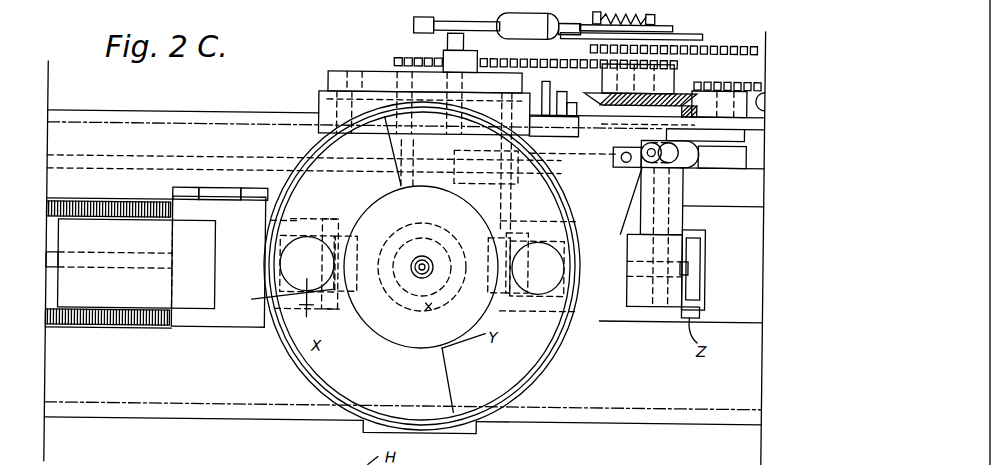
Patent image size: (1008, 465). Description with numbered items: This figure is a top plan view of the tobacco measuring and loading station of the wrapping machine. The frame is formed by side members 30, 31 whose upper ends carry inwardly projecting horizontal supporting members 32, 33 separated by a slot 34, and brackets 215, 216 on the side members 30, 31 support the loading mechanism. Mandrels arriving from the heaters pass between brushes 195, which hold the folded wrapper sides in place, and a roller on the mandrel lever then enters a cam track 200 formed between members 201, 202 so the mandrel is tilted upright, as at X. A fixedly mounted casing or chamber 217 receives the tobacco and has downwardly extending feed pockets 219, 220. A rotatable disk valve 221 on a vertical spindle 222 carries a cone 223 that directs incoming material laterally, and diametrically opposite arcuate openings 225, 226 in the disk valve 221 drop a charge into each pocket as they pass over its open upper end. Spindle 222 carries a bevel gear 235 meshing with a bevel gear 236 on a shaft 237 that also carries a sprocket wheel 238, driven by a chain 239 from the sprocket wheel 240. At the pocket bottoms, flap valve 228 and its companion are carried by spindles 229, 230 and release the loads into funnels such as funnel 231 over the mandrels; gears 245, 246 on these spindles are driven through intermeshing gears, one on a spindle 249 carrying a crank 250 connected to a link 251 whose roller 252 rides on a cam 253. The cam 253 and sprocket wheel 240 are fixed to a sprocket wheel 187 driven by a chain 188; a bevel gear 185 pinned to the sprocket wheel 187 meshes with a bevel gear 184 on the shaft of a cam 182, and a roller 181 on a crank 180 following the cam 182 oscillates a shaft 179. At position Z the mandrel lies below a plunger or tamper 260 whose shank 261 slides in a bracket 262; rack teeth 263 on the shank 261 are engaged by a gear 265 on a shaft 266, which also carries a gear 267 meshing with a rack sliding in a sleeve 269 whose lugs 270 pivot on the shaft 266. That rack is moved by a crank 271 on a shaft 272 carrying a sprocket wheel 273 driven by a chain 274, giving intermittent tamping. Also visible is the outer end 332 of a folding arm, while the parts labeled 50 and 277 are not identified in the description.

The side member 30 is at (137, 121).
The side member 31 is at (117, 423).
The horizontal supporting member 32 is at (60, 189).
The horizontal supporting member 33 is at (58, 362).
The slot 34 is at (46, 261).
The slide block 50 is at (68, 288).
The shaft 179 is at (98, 168).
The crank 180 is at (425, 82).
The roller 181 is at (543, 80).
The cam 182 is at (552, 93).
The bevel gear 184 is at (711, 72).
The bevel gear 185 is at (606, 89).
The sprocket wheel 187 is at (688, 50).
The chain 188 is at (763, 30).
The brushes 195 is at (120, 199).
The cam track 200 is at (215, 199).
The member 201 is at (188, 199).
The member 202 is at (255, 199).
The bracket 215 is at (385, 150).
The bracket 216 is at (368, 429).
The casing or chamber 217 is at (275, 331).
The feed pocket 219 is at (282, 262).
The feed pocket 220 is at (560, 264).
The rotatable disk valve 221 is at (305, 336).
The vertical spindle 222 is at (418, 279).
The cone 223 is at (373, 312).
The arcuate opening 225 is at (278, 298).
The arcuate opening 226 is at (563, 236).
The flap valve 228 is at (537, 294).
The spindle 229 is at (338, 207).
The spindle 230 is at (518, 246).
The funnel 231 is at (283, 221).
The bevel gear 235 is at (433, 309).
The bevel gear 236 is at (447, 228).
The shaft 237 is at (402, 200).
The sprocket wheel 238 is at (392, 62).
The chain 239 is at (400, 60).
The sprocket wheel 240 is at (640, 68).
The gear 245 is at (318, 112).
The gear 246 is at (486, 161).
The spindle 249 is at (442, 62).
The crank 250 is at (442, 24).
The link 251 is at (518, 33).
The roller 252 is at (590, 46).
The cam 253 is at (712, 31).
The plunger or tamper 260 is at (700, 312).
The shank 261 is at (700, 294).
The bracket 262 is at (705, 242).
The rack teeth 263 is at (688, 267).
The gear 265 is at (617, 296).
The shaft 266 is at (690, 219).
The gear 267 is at (657, 153).
The sleeve 269 is at (668, 160).
The lug 270 is at (650, 140).
The crank 271 is at (712, 143).
The shaft 272 is at (740, 133).
The sprocket wheel 273 is at (752, 100).
The chain 274 is at (740, 74).
The pin 277 is at (306, 307).
The outer end of arm 332 is at (560, 320).